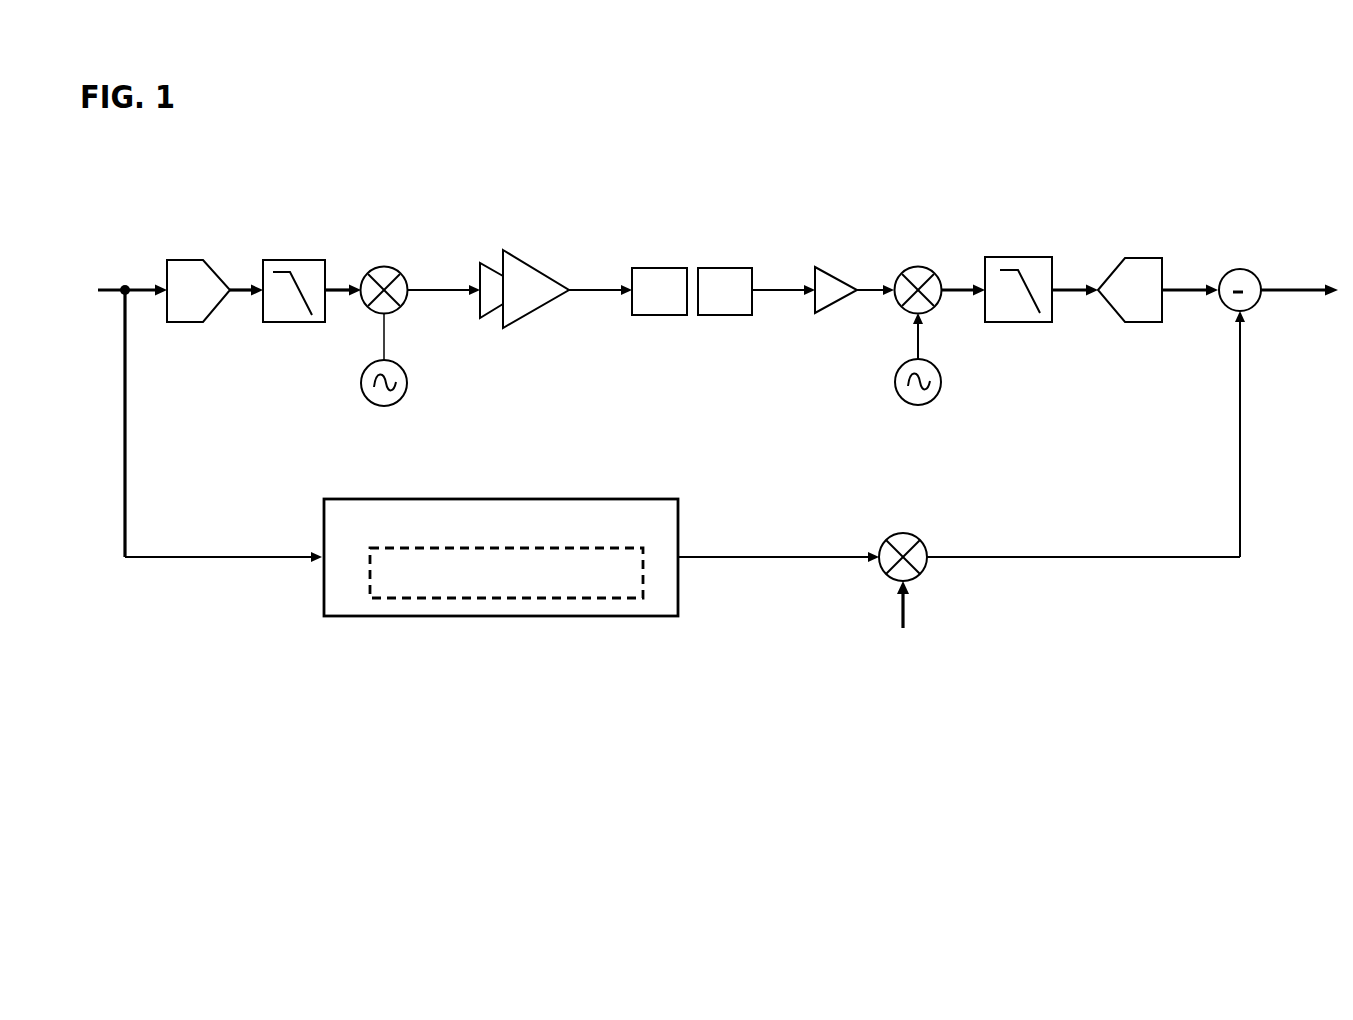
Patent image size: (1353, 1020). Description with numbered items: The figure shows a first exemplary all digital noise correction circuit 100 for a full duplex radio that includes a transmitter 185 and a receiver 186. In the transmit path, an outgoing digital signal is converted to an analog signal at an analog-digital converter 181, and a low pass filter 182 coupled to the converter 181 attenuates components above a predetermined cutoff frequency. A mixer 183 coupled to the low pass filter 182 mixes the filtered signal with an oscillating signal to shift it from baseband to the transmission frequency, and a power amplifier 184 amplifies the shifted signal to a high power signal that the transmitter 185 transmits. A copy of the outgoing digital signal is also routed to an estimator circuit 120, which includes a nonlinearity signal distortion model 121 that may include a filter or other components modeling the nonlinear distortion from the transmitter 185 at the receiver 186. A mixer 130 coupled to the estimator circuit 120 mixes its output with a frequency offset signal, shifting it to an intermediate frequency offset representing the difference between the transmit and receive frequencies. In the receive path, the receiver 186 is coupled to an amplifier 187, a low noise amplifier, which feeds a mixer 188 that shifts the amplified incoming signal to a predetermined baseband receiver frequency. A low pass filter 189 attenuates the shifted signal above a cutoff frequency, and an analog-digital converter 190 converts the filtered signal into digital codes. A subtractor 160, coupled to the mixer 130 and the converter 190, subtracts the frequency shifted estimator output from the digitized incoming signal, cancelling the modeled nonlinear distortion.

The all digital noise correction circuit 100 is at (135, 170).
The estimator circuit 120 is at (598, 532).
The nonlinearity signal distortion model 121 is at (616, 586).
The mixer 130 is at (908, 540).
The subtractor 160 is at (1242, 275).
The analog-digital converter 181 is at (194, 268).
The low pass filter 182 is at (308, 268).
The mixer 183 is at (385, 272).
The power amplifier 184 is at (530, 276).
The transmitter 185 is at (660, 317).
The receiver 186 is at (738, 279).
The amplifier 187 is at (830, 283).
The mixer 188 is at (920, 270).
The low pass filter 189 is at (1032, 262).
The analog-digital converter 190 is at (1145, 262).